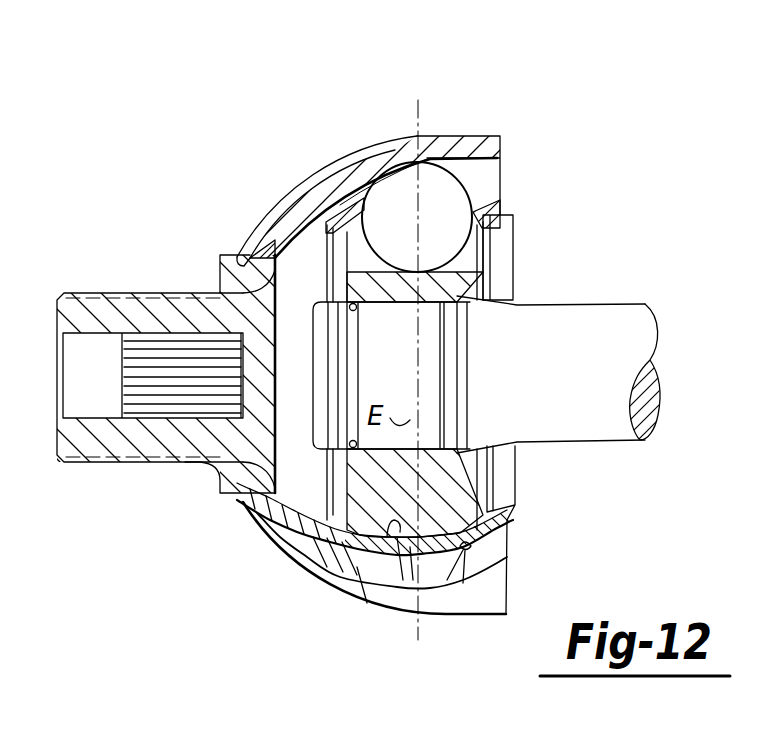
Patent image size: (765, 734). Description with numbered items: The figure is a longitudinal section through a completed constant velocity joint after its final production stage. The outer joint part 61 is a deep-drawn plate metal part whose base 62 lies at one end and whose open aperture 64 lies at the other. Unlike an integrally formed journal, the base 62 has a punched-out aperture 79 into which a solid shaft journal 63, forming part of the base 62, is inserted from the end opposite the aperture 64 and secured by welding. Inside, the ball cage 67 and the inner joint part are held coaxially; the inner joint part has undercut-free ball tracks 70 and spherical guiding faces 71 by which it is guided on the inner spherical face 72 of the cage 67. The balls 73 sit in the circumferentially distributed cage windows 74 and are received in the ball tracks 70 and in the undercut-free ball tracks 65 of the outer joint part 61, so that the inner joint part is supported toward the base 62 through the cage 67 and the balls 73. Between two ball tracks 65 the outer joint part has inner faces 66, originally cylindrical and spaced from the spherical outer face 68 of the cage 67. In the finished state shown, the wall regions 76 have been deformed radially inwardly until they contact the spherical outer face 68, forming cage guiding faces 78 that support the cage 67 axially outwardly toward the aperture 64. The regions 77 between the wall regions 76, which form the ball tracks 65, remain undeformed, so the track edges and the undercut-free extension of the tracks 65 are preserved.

The outer joint part 61 is at (305, 175).
The base 62 is at (227, 290).
The solid shaft journal 63 is at (120, 320).
The aperture 64 is at (512, 200).
The ball tracks 65 is at (477, 158).
The inner faces 66 is at (340, 573).
The ball cage 67 is at (318, 573).
The spherical outer face of the cage 68 is at (307, 562).
The ball tracks of the inner joint part 70 is at (475, 200).
The spherical guiding faces 71 is at (398, 525).
The inner spherical face of the cage 72 is at (356, 542).
The balls 73 is at (400, 200).
The cage windows 74 is at (385, 200).
The wall regions 76 is at (480, 567).
The regions forming the ball tracks 77 is at (500, 600).
The cage guiding faces 78 is at (472, 550).
The punched-out aperture 79 is at (252, 252).